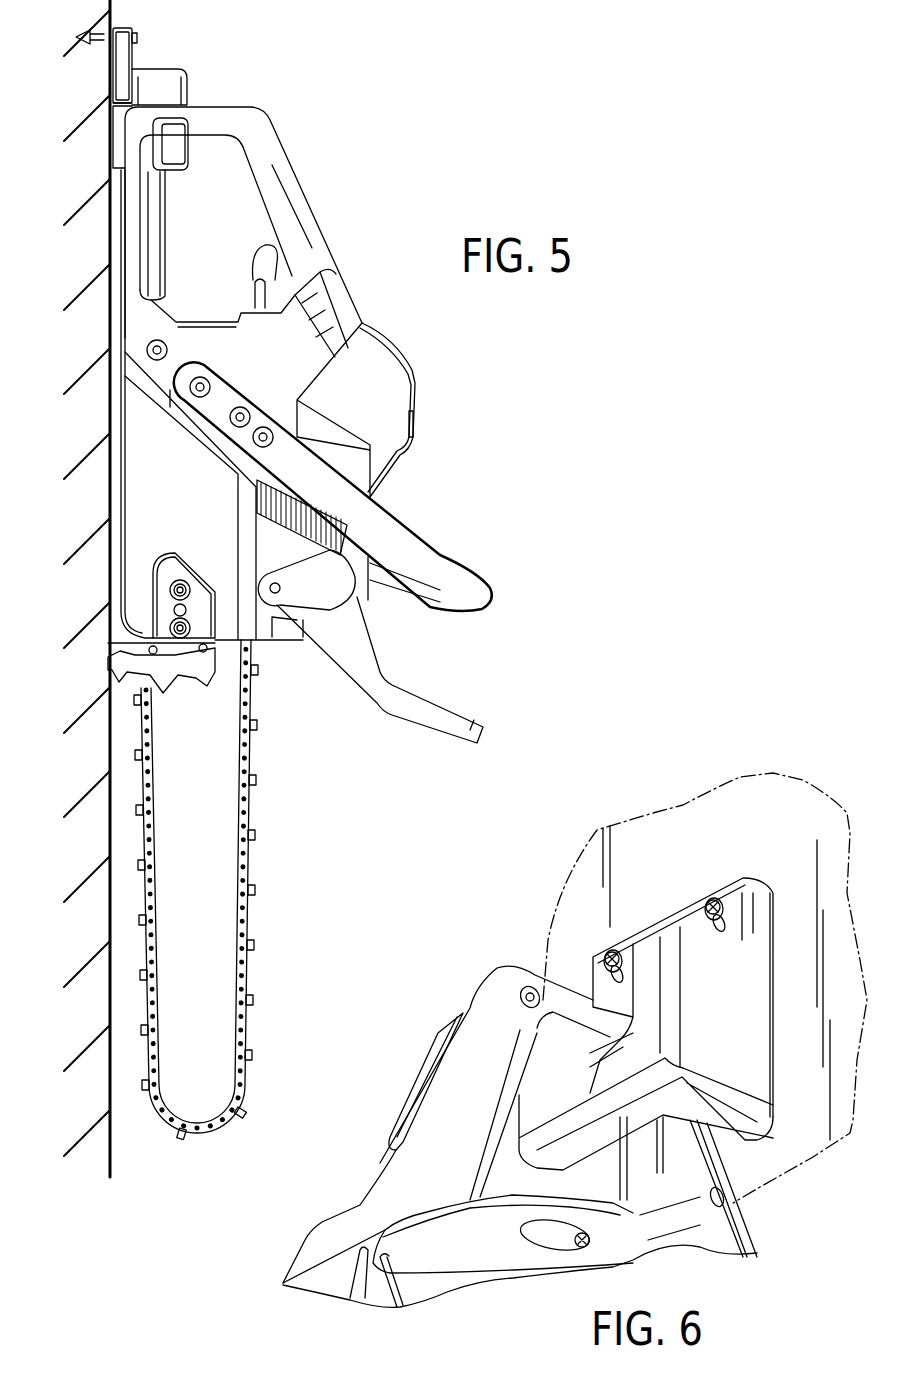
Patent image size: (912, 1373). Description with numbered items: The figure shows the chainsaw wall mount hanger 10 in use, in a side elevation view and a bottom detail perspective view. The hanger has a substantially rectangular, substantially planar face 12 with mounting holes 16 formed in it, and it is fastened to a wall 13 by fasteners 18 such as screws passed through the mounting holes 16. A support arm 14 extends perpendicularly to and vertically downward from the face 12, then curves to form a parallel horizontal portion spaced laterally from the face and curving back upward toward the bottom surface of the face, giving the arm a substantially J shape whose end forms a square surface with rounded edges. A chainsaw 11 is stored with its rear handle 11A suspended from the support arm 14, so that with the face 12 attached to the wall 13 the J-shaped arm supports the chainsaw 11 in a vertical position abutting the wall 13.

In FIG. 5, the chainsaw wall mount hanger 10 is at (192, 71).
In FIG. 5, the chainsaw 11 is at (459, 343).
In FIG. 6, the chainsaw 11 is at (367, 1055).
In FIG. 5, the rear handle 11A is at (280, 158).
In FIG. 6, the rear handle 11A is at (481, 1010).
In FIG. 6, the face 12 is at (597, 995).
In FIG. 5, the wall 13 is at (112, 1090).
In FIG. 6, the wall 13 is at (807, 1123).
In FIG. 5, the support arm 14 is at (190, 147).
In FIG. 6, the support arm 14 is at (585, 1085).
In FIG. 6, the mounting holes 16 is at (607, 1000).
In FIG. 5, the fasteners 18 is at (140, 37).
In FIG. 6, the fasteners 18 is at (619, 947).